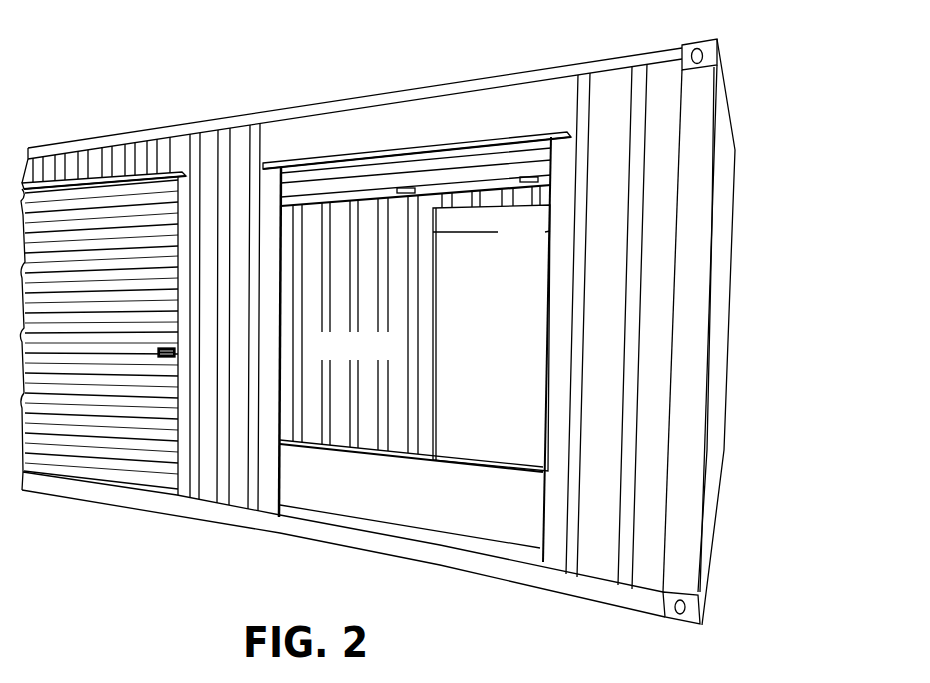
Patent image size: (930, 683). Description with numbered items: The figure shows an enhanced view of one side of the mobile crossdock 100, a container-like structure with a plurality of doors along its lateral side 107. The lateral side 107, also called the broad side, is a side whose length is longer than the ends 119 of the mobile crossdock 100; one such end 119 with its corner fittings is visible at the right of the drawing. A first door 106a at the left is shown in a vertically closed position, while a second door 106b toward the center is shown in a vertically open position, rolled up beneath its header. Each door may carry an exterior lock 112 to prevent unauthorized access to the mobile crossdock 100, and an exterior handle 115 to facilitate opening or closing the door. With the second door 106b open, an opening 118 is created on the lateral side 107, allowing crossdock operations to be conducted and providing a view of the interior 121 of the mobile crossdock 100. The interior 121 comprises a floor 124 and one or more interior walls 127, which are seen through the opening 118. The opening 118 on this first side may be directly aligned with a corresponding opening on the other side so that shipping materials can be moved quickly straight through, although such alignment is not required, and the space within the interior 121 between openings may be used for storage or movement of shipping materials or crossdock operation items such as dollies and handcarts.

The mobile crossdock 100 is at (658, 51).
The first door 106a is at (102, 484).
The second door 106b is at (282, 200).
The lateral side 107 is at (623, 259).
The exterior lock 112 is at (179, 362).
The exterior handle 115 is at (524, 184).
The opening 118 is at (299, 527).
The end 119 is at (722, 492).
The interior 121 is at (402, 355).
The floor 124 is at (397, 496).
The interior wall 127 is at (431, 300).